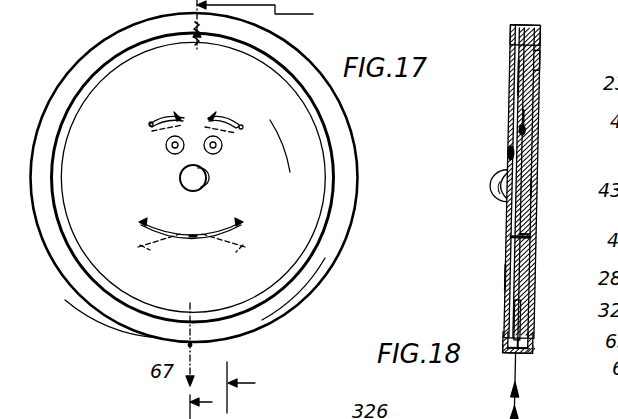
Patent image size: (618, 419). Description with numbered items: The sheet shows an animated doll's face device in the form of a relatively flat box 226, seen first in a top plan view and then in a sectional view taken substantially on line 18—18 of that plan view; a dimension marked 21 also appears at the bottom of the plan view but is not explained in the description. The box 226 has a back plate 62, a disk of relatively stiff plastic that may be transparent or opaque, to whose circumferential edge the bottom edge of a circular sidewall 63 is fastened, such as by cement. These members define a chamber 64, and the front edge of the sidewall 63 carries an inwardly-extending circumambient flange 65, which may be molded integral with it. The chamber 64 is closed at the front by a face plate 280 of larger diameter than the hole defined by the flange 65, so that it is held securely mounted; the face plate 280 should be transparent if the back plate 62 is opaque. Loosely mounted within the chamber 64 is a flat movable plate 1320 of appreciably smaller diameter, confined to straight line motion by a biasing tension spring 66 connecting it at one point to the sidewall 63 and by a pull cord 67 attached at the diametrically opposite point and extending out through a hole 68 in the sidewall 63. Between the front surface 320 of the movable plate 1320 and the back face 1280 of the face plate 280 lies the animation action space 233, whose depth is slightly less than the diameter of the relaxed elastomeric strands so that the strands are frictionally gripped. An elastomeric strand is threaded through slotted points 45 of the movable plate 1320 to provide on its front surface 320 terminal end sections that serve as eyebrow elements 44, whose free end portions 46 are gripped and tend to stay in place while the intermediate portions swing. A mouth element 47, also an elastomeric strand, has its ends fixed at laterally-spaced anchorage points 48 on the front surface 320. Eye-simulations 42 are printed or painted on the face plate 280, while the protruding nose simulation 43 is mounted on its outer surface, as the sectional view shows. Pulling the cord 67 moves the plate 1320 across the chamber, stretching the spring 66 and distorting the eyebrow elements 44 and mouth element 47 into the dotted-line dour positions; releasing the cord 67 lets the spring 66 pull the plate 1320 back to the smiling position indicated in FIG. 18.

In FIG. 17, the section line 18 is at (262, 210).
In FIG. 17, the dimension 21 is at (254, 387).
In FIG. 17, the eye-simulations 42 is at (167, 150).
In FIG. 18, the eye-simulations 42 is at (508, 152).
In FIG. 17, the nose simulation 43 is at (205, 184).
In FIG. 18, the nose simulation 43 is at (490, 185).
In FIG. 17, the eyebrow elements 44 is at (180, 116).
In FIG. 18, the eyebrow elements 44 is at (520, 130).
In FIG. 17, the transversely-spaced slotted points 45 is at (211, 116).
In FIG. 18, the transversely-spaced slotted points 45 is at (528, 117).
In FIG. 17, the free end portions of eyebrow elements 46 is at (148, 125).
In FIG. 17, the mouth element 47 is at (222, 230).
In FIG. 18, the mouth element 47 is at (511, 235).
In FIG. 17, the laterally-spaced anchorage points 48 is at (137, 222).
In FIG. 18, the laterally-spaced anchorage points 48 is at (535, 238).
In FIG. 18, the back plate 62 is at (538, 101).
In FIG. 17, the sidewall 63 is at (297, 305).
In FIG. 18, the sidewall 63 is at (515, 355).
In FIG. 17, the chamber 64 is at (296, 273).
In FIG. 18, the chamber 64 is at (523, 335).
In FIG. 17, the circumambient flange 65 is at (130, 313).
In FIG. 18, the circumambient flange 65 is at (507, 338).
In FIG. 17, the biasing tension spring 66 is at (190, 27).
In FIG. 18, the biasing tension spring 66 is at (538, 40).
In FIG. 18, the pull cord 67 is at (521, 383).
In FIG. 18, the hole 68 is at (517, 358).
In FIG. 17, the flat box 226 is at (362, 214).
In FIG. 18, the flat box 226 is at (542, 352).
In FIG. 18, the animation action space 233 is at (516, 79).
In FIG. 17, the face plate 280 is at (305, 163).
In FIG. 18, the face plate 280 is at (502, 277).
In FIG. 18, the front surface of movable plate 320 is at (518, 303).
In FIG. 18, the back face of face plate 1280 is at (537, 188).
In FIG. 17, the movable plate 1320 is at (334, 176).
In FIG. 18, the movable plate 1320 is at (538, 63).